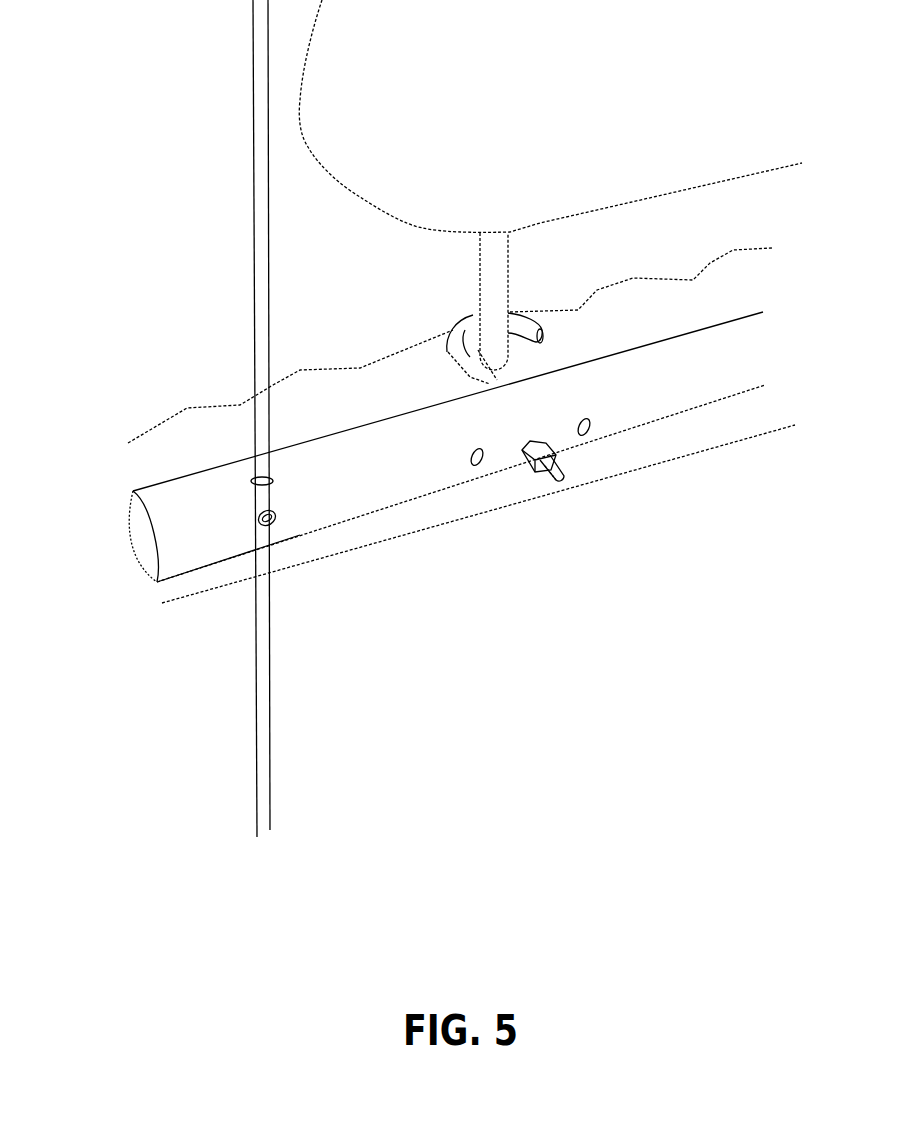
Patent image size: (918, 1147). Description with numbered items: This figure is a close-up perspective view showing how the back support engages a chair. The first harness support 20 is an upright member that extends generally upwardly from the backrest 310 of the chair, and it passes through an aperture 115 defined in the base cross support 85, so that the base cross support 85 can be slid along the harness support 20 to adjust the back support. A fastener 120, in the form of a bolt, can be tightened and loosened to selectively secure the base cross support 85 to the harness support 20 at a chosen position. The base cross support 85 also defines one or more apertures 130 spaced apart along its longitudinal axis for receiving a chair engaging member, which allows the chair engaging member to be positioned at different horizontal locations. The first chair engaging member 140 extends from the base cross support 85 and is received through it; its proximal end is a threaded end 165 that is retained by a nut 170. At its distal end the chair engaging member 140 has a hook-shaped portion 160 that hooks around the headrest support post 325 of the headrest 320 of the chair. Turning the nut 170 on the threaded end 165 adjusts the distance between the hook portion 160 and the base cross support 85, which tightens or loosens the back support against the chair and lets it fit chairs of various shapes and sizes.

The first harness support 20 is at (253, 237).
The base cross support 85 is at (168, 563).
The aperture 115 is at (272, 477).
The fastener 120 is at (258, 518).
The apertures 130 is at (590, 418).
The first chair engaging member 140 is at (473, 378).
The hook-shaped portion 160 is at (523, 318).
The threaded end 165 is at (560, 473).
The nut 170 is at (527, 470).
The backrest 310 is at (743, 290).
The headrest 320 is at (482, 138).
The headrest support post 325 is at (487, 258).